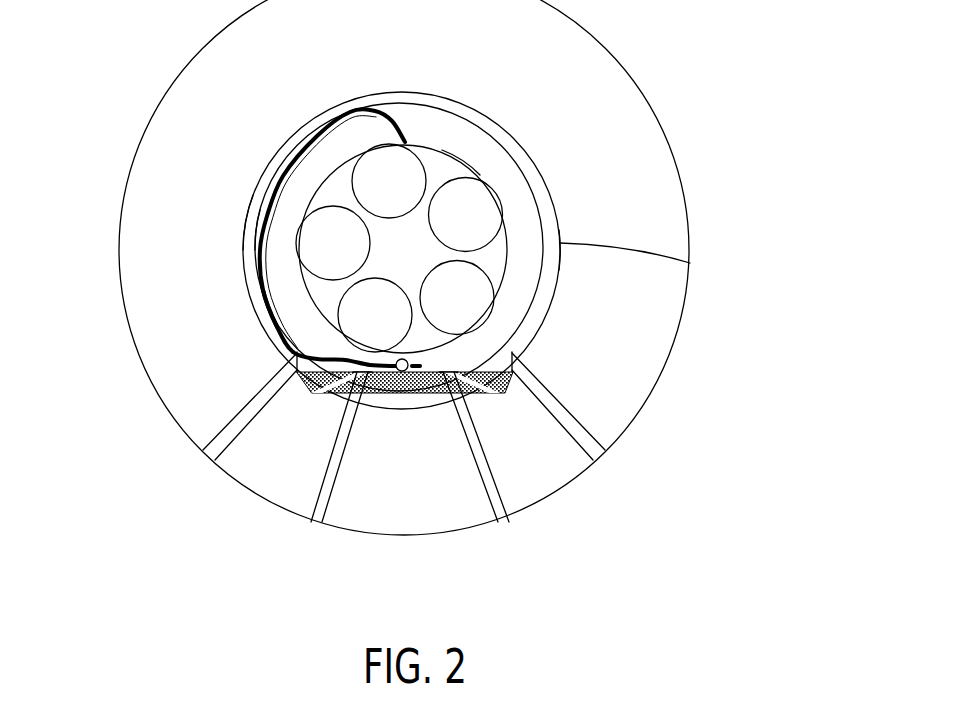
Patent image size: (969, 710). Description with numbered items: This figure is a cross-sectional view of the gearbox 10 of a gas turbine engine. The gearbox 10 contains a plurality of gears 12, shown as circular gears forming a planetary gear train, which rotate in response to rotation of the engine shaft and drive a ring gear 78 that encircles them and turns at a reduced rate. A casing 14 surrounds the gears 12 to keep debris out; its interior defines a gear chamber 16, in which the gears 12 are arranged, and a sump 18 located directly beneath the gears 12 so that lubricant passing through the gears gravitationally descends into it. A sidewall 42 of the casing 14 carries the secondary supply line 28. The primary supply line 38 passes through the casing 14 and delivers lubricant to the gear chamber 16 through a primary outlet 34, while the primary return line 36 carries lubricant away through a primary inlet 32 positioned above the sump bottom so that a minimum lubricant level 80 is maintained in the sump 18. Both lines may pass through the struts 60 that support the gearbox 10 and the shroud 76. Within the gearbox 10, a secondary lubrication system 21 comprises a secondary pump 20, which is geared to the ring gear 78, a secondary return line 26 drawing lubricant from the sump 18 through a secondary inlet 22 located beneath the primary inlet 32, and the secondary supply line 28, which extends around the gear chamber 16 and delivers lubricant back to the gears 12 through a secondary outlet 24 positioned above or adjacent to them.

The gearbox 10 is at (263, 133).
The plurality of gears 12 is at (378, 197).
The casing 14 is at (340, 106).
The gear chamber 16 is at (522, 179).
The sump 18 is at (328, 360).
The secondary pump 20 is at (400, 372).
The secondary lubrication system 21 is at (247, 300).
The secondary inlet 22 is at (424, 407).
The secondary outlet 24 is at (412, 131).
The secondary return line 26 is at (423, 367).
The secondary supply line 28 is at (256, 243).
The primary inlet 32 is at (351, 380).
The primary outlet 34 is at (573, 236).
The primary return line 36 is at (328, 480).
The primary supply line 38 is at (621, 246).
The sidewall 42 is at (257, 196).
The struts 60 is at (215, 447).
The shroud 76 is at (119, 262).
The ring gear 78 is at (462, 157).
The minimum lubricant level 80 is at (513, 372).